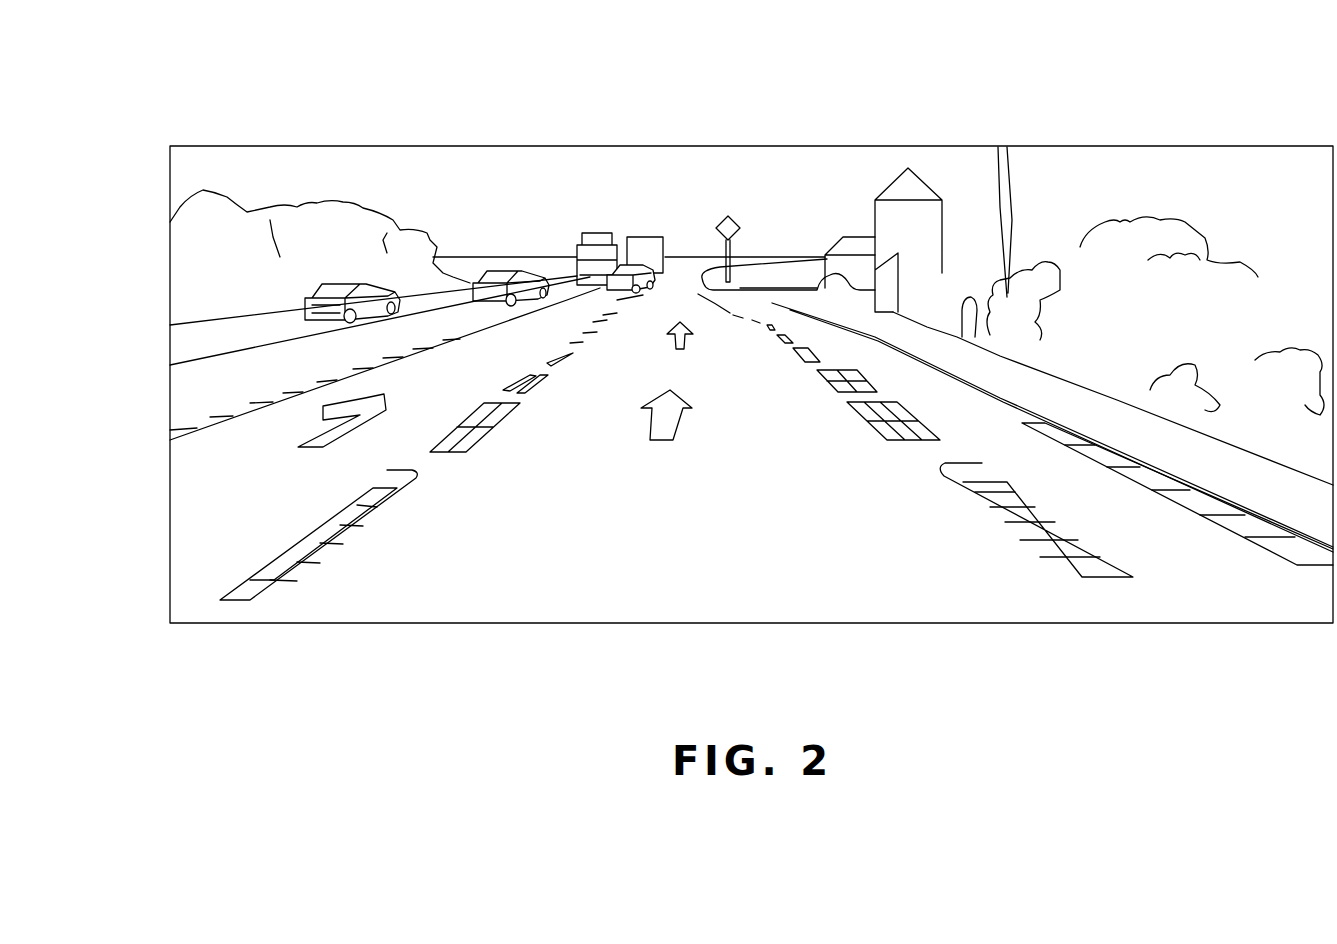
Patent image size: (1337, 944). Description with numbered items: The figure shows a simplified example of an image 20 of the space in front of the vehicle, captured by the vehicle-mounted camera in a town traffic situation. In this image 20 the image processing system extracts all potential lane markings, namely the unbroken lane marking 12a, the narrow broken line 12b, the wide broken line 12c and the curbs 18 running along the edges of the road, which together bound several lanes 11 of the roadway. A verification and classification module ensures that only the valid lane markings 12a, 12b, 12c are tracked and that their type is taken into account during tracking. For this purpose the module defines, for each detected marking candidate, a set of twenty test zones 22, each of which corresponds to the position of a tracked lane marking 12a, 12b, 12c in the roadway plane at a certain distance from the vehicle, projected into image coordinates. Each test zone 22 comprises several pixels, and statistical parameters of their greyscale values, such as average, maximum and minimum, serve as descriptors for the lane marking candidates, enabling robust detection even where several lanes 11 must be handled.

The image 20 is at (333, 146).
The curb 18 is at (187, 320).
The left lane marking 12a is at (445, 346).
The narrow broken line 12b is at (267, 587).
The wide broken line 12c is at (1103, 565).
The lane 11 is at (268, 496).
The test zone 22 is at (330, 525).